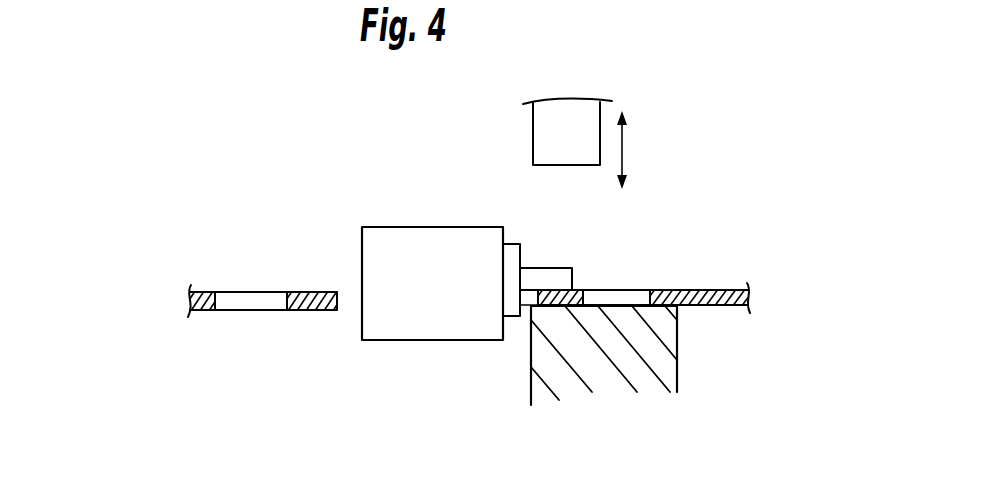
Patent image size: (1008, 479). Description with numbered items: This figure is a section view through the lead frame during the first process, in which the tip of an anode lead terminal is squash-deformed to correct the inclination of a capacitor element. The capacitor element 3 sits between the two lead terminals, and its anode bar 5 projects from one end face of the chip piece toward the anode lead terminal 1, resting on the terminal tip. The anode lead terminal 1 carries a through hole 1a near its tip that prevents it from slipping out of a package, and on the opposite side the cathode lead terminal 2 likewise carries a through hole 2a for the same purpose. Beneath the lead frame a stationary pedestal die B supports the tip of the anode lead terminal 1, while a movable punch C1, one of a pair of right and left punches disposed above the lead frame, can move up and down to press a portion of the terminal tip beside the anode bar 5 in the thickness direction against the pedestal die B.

The anode lead terminal 1 is at (727, 293).
The through hole 1a is at (623, 298).
The cathode lead terminal 2 is at (200, 291).
The through hole 2a is at (255, 306).
The capacitor element 3 is at (388, 216).
The anode bar 5 is at (541, 274).
The stationary pedestal die B is at (516, 385).
The movable punch C1 is at (607, 108).